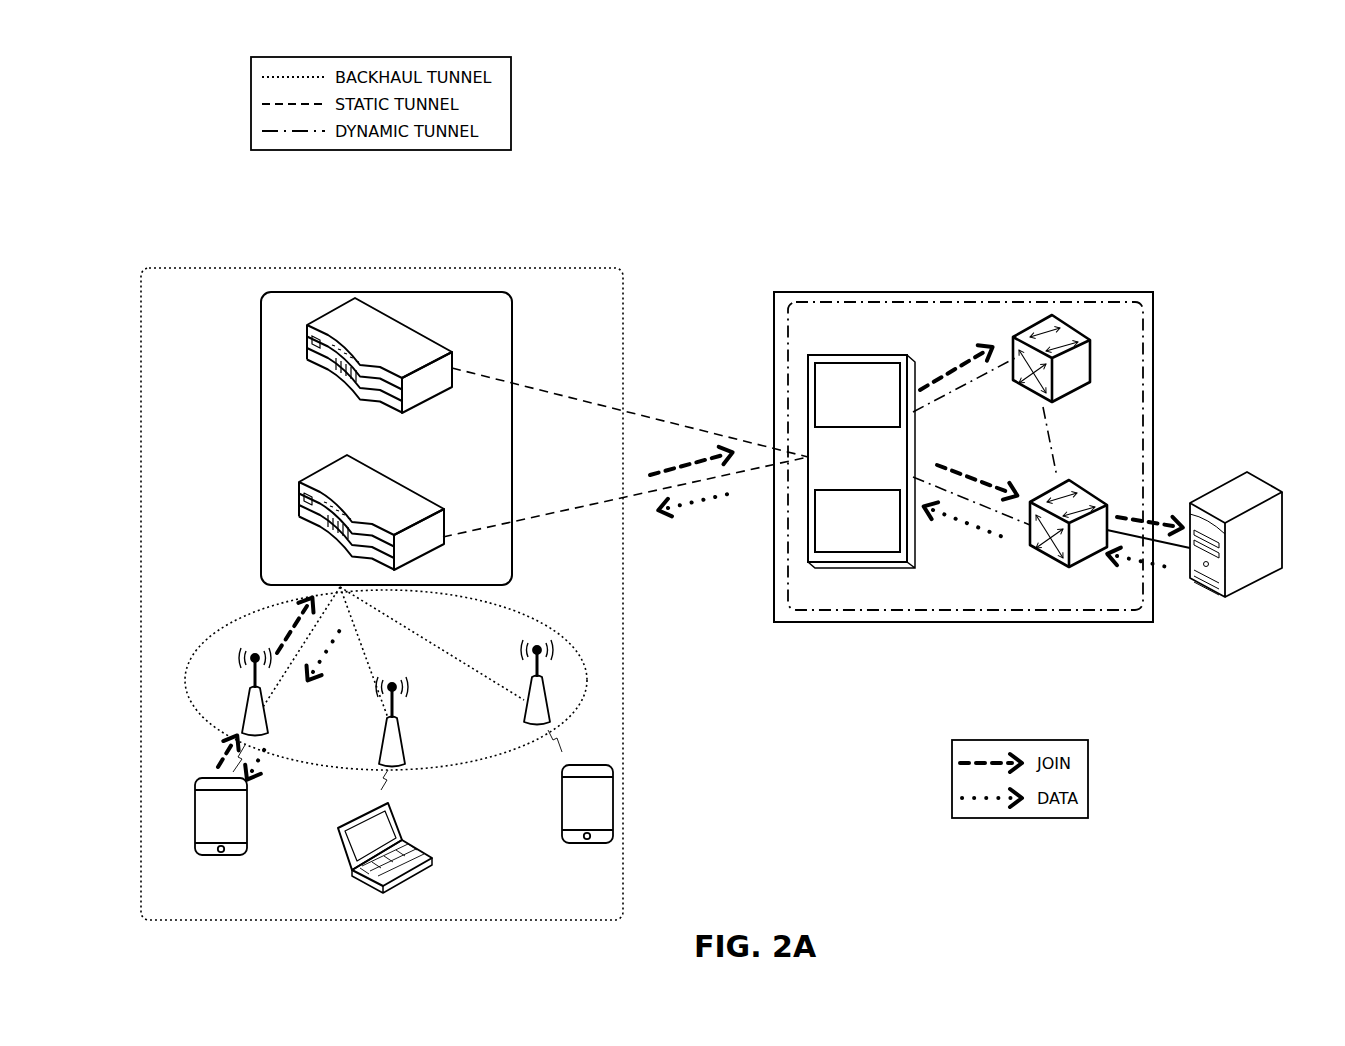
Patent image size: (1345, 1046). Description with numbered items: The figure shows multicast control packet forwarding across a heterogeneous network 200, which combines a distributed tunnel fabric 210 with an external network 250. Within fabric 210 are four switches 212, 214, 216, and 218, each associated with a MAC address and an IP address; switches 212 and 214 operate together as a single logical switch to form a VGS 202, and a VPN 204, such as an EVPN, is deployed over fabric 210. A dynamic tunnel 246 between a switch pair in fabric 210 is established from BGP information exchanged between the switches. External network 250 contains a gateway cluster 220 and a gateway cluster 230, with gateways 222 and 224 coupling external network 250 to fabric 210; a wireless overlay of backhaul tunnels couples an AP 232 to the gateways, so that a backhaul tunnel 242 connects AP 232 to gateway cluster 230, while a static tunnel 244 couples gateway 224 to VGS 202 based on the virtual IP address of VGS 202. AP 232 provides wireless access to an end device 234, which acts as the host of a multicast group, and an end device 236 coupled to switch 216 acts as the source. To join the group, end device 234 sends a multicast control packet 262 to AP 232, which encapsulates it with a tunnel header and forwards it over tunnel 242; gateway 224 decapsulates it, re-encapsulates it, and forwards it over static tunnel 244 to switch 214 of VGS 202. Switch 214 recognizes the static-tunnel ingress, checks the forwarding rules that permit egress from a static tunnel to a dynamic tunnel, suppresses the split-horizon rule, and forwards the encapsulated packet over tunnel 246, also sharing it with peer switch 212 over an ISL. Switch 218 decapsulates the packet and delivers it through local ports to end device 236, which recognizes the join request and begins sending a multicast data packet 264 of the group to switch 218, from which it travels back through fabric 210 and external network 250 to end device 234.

The network 200 is at (1216, 128).
The VGS 202 is at (861, 461).
The VPN 204 is at (965, 612).
The distributed tunnel fabric 210 is at (962, 292).
The switch 212 is at (857, 395).
The switch 214 is at (857, 521).
The switch 216 is at (1092, 360).
The switch 218 is at (1086, 499).
The gateway cluster 220 is at (365, 292).
The gateway 222 is at (453, 369).
The gateway 224 is at (445, 529).
The gateway cluster 230 is at (588, 665).
The AP 232 is at (243, 713).
The end device 234 is at (222, 858).
The end device 236 is at (1256, 478).
The backhaul tunnel 242 is at (280, 687).
The static tunnel 244 is at (757, 474).
The tunnel 246 is at (1016, 516).
The external network 250 is at (562, 268).
The multicast control packet 262 is at (215, 770).
The multicast data packet 264 is at (1167, 571).